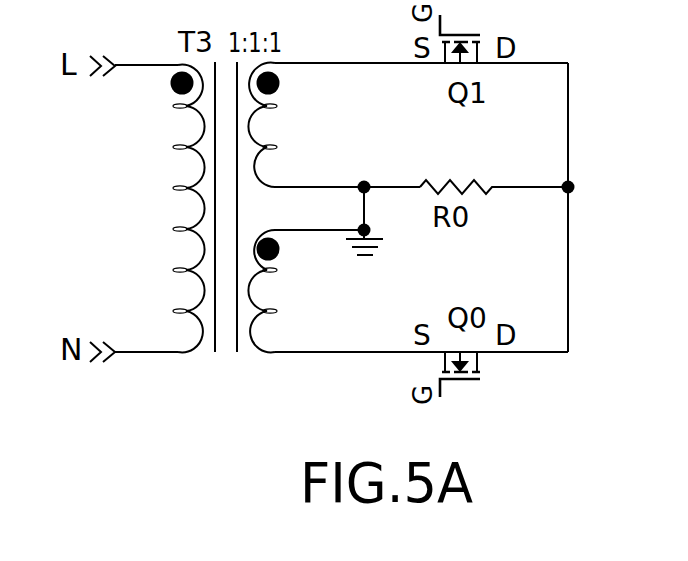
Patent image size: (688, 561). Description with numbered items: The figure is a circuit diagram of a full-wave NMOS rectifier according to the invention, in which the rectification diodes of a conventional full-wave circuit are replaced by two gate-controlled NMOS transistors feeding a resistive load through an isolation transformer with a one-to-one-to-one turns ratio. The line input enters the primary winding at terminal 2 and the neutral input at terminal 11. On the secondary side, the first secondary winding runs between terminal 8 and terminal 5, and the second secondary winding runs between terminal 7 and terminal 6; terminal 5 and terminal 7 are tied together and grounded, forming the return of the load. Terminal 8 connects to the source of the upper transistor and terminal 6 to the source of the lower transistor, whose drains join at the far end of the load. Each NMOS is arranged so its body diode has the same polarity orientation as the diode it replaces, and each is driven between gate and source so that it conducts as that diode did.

The primary winding line terminal 2 is at (134, 55).
The primary winding neutral terminal 11 is at (134, 343).
The first secondary winding terminal 8 is at (360, 49).
The first secondary winding center terminal 5 is at (319, 174).
The second secondary winding terminal 7 is at (319, 216).
The second secondary winding terminal 6 is at (360, 338).